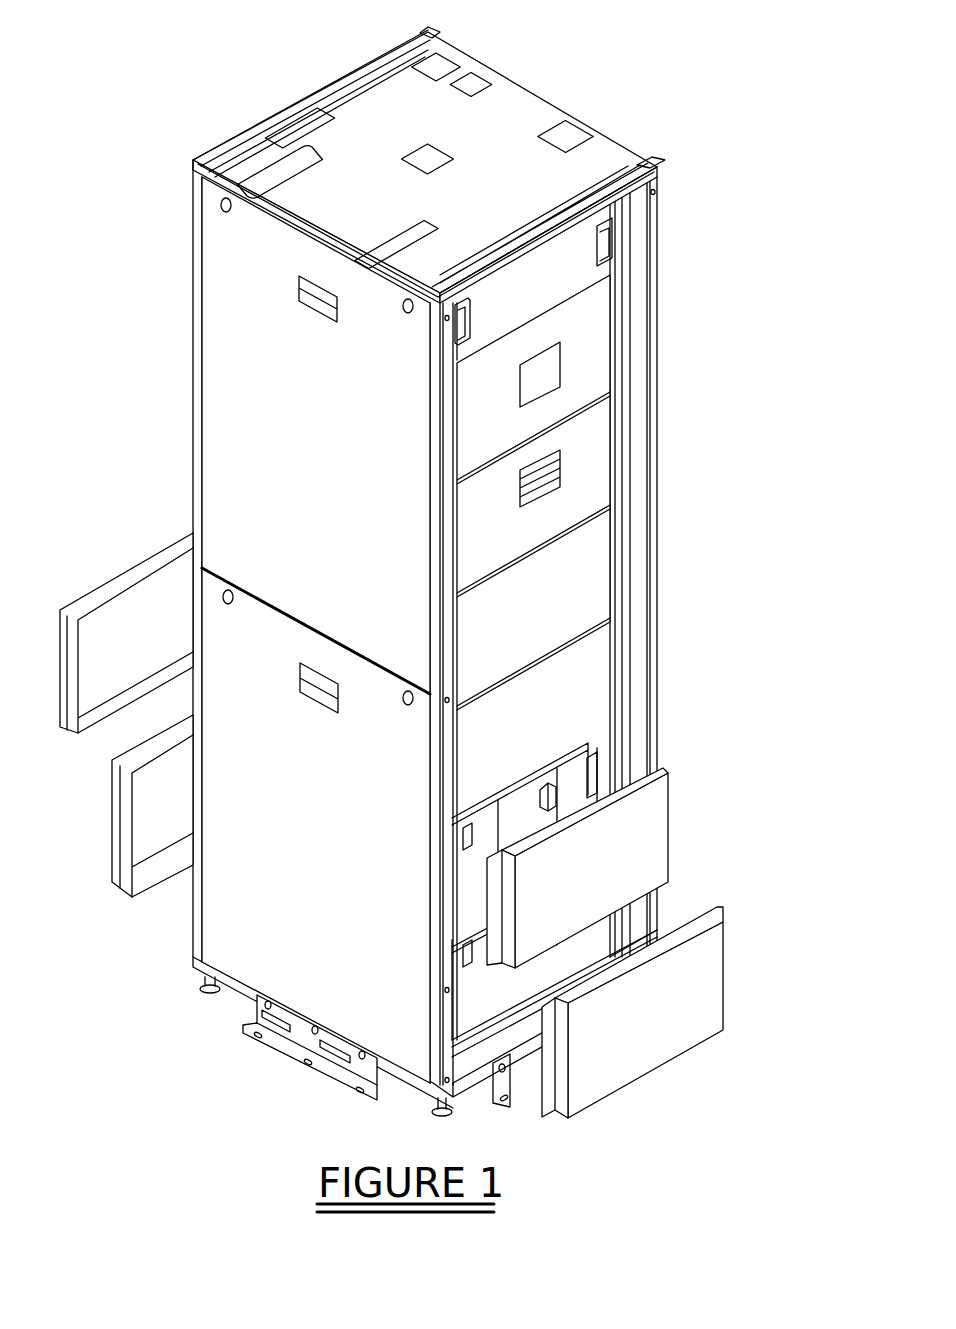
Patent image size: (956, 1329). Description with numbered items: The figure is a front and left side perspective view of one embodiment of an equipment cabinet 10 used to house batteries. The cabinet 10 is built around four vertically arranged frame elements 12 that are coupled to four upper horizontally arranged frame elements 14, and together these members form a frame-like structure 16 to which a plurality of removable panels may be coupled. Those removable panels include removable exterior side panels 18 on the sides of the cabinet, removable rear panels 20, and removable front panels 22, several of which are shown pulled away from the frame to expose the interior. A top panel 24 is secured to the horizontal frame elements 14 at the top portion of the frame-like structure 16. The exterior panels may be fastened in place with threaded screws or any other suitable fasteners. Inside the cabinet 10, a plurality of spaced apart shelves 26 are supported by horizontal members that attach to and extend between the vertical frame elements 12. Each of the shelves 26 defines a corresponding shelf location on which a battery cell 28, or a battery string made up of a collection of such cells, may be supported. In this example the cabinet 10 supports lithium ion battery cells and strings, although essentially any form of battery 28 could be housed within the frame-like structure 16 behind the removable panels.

The equipment cabinet 10 is at (285, 52).
The vertically arranged frame elements 12 is at (200, 249).
The upper horizontally arranged frame elements 14 is at (213, 163).
The frame-like structure 16 is at (684, 367).
The removable exterior side panels 18 is at (245, 343).
The removable rear panels 20 is at (110, 618).
The removable front panels 22 is at (595, 325).
The top panel 24 is at (493, 150).
The shelves 26 is at (578, 970).
The battery cell 28 is at (532, 815).